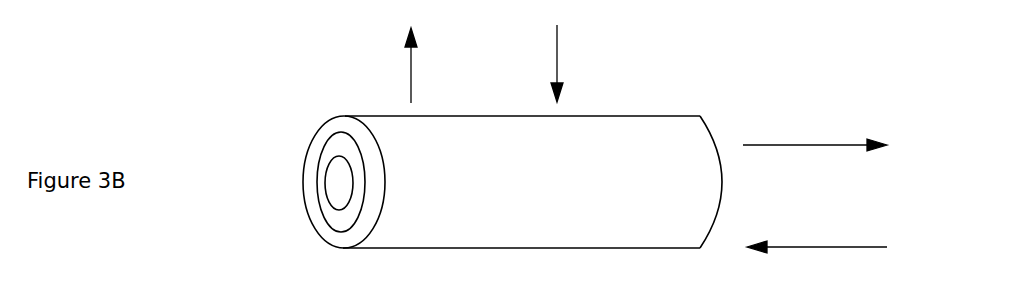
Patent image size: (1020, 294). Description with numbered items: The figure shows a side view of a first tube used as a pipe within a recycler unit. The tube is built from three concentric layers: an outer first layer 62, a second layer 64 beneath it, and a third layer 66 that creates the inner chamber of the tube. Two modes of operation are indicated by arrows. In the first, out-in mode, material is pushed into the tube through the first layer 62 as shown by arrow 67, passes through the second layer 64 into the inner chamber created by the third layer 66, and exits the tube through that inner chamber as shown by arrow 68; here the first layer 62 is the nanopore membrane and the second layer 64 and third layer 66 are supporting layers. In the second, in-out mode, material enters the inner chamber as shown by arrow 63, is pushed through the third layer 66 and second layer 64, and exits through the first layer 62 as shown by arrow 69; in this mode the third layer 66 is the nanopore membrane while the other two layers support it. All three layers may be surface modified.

The first layer 62 is at (318, 144).
The second layer 64 is at (322, 158).
The third layer 66 is at (322, 186).
The arrow 69 is at (412, 58).
The arrow 67 is at (558, 58).
The arrow 68 is at (765, 143).
The arrow 63 is at (765, 242).